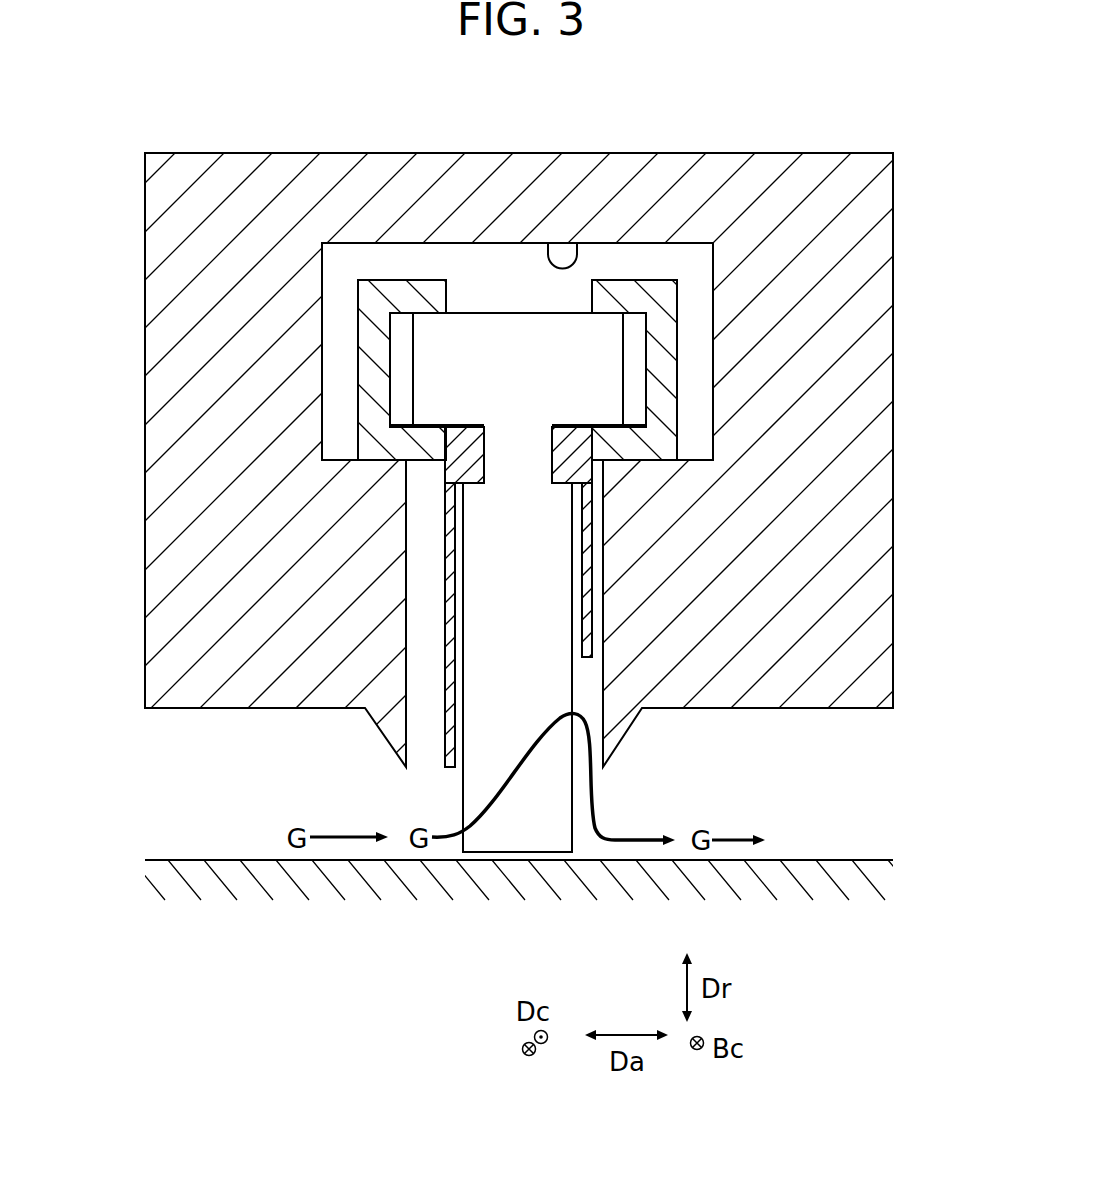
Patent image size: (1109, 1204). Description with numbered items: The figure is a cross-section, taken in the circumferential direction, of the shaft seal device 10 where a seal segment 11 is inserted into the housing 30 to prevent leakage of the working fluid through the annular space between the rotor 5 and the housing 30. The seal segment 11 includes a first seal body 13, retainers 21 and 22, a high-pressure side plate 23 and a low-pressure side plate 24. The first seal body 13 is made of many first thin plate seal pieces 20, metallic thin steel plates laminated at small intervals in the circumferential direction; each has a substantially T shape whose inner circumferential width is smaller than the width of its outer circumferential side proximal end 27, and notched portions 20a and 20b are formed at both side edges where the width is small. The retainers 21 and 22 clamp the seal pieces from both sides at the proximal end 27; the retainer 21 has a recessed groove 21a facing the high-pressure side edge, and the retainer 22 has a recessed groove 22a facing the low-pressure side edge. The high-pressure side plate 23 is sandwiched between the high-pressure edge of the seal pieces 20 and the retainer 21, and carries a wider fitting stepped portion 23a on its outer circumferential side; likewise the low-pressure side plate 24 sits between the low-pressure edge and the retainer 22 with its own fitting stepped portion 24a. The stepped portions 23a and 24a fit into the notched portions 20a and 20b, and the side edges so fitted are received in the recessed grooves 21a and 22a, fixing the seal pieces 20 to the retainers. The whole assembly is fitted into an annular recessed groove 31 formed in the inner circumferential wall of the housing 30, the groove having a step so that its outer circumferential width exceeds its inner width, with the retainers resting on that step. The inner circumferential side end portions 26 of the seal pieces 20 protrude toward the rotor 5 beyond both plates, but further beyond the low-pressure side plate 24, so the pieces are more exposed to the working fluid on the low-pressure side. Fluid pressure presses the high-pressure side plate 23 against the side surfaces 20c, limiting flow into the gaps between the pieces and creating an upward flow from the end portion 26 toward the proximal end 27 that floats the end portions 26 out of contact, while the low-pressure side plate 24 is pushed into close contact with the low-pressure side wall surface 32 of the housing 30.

The rotor 5 is at (840, 870).
The shaft seal device 10 is at (660, 255).
The seal segment 11 is at (606, 262).
The first seal body 13 is at (486, 297).
The first thin plate seal piece 20 is at (480, 660).
The notched portion 20a is at (480, 458).
The notched portion 20b is at (556, 464).
The side surface 20c is at (460, 703).
The retainer 21 is at (372, 348).
The recessed groove 21a is at (390, 377).
The retainer 22 is at (657, 353).
The recessed groove 22a is at (647, 378).
The high-pressure side plate 23 is at (433, 633).
The fitting stepped portion 23a is at (467, 453).
The low-pressure side plate 24 is at (609, 578).
The fitting stepped portion 24a is at (568, 447).
The inner circumferential side end portion 26 is at (517, 833).
The outer circumferential side proximal end 27 is at (517, 322).
The housing 30 is at (868, 253).
The annular recessed groove 31 is at (570, 243).
The low-pressure side wall surface 32 is at (597, 636).